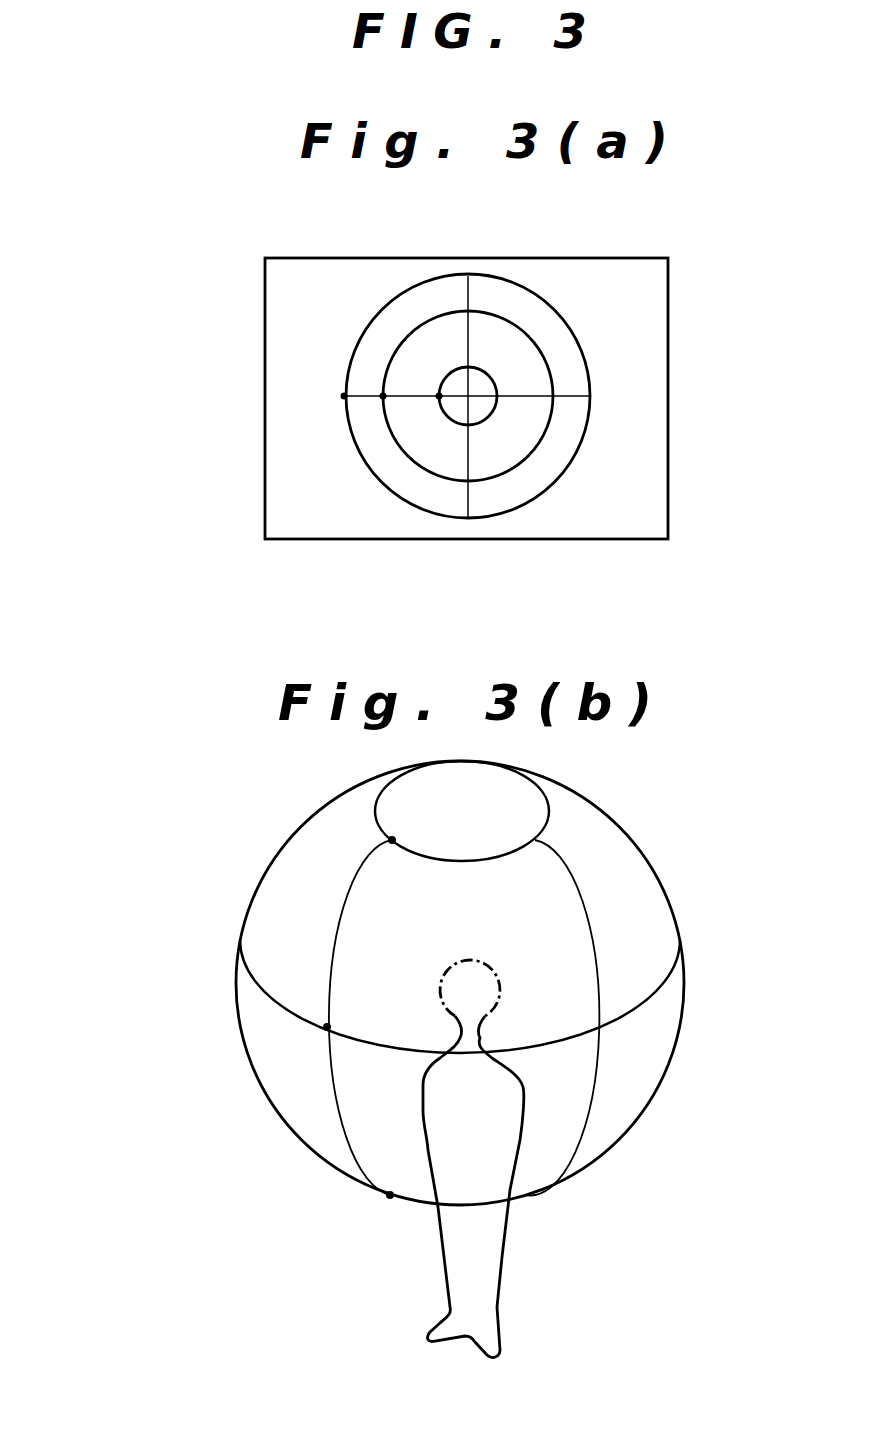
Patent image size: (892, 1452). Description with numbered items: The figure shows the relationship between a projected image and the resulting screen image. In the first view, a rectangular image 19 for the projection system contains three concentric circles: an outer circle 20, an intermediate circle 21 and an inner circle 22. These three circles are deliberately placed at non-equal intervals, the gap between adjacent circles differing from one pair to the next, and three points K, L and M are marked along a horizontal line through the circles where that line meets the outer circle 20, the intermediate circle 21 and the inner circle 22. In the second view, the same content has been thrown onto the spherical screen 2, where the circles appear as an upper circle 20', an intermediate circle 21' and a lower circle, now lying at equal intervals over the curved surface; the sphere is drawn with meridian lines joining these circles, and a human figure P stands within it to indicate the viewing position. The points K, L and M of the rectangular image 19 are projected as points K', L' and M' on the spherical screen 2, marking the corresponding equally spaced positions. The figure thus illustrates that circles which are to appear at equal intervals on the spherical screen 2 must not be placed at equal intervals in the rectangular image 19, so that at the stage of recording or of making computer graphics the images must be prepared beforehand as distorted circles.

In FIG. 3B, the spherical screen 2 is at (665, 887).
In FIG. 3A, the rectangular image 19 is at (648, 340).
In FIG. 3A, the outer circle 20 is at (462, 352).
In FIG. 3A, the intermediate circle 21 is at (504, 334).
In FIG. 3A, the inner circle 22 is at (450, 425).
In FIG. 3B, the inner circle 22 is at (525, 1200).
In FIG. 3B, the upper circle 20' is at (531, 808).
In FIG. 3B, the intermediate circle 21' is at (508, 996).
In FIG. 3B, the person (viewer) P is at (507, 1092).
In FIG. 3A, the point K is at (326, 394).
In FIG. 3A, the point L is at (370, 415).
In FIG. 3A, the point M is at (421, 415).
In FIG. 3B, the point K' is at (367, 844).
In FIG. 3B, the point L' is at (305, 1041).
In FIG. 3B, the point M' is at (369, 1214).